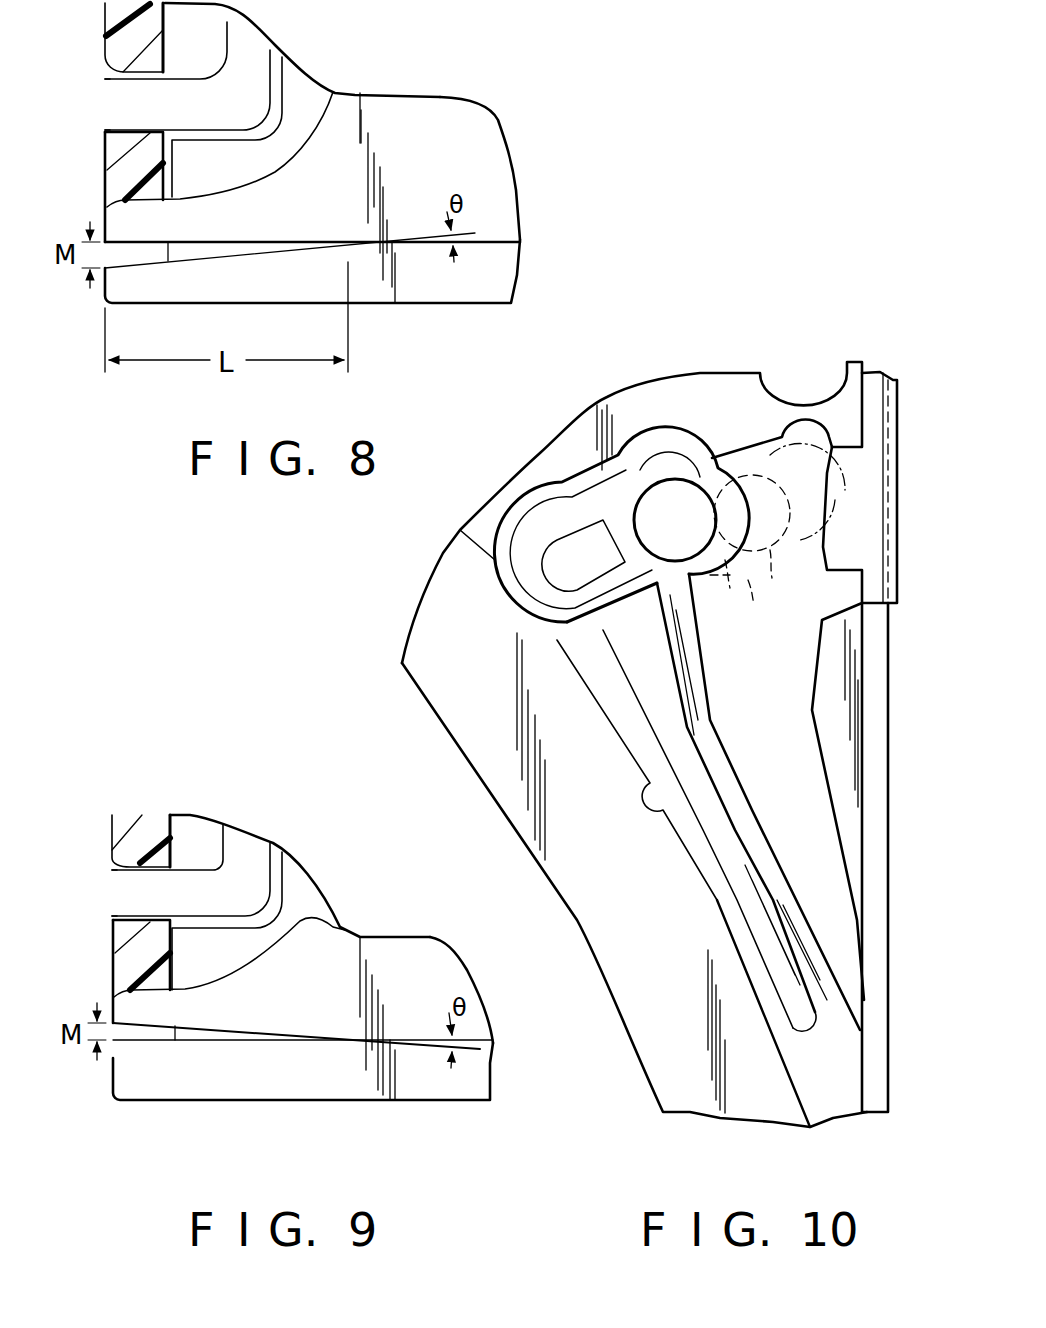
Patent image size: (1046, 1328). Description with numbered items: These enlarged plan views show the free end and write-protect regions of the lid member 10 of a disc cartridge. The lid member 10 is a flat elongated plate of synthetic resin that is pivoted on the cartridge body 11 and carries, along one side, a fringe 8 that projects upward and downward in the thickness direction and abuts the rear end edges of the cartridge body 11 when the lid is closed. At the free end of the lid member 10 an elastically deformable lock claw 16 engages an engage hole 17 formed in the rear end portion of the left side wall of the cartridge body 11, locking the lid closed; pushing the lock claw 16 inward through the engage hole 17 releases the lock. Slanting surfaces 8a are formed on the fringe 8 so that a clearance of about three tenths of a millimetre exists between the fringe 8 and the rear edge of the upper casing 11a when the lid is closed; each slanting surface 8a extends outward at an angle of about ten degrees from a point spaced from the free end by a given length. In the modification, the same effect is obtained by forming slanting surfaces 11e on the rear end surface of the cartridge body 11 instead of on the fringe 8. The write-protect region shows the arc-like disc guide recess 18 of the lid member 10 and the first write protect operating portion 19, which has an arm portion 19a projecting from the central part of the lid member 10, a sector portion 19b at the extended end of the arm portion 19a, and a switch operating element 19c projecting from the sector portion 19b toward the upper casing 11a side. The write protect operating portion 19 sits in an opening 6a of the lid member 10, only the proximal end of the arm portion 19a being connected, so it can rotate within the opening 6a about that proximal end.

In FIG. 8, the fringe 8 is at (435, 300).
In FIG. 9, the fringe 8 is at (355, 1100).
In FIG. 8, the slanting surfaces 8a is at (235, 243).
In FIG. 8, the lid member 10 is at (308, 90).
In FIG. 10, the lid member 10 is at (890, 703).
In FIG. 8, the cartridge body 11 is at (436, 88).
In FIG. 9, the cartridge body 11 is at (271, 916).
In FIG. 8, the upper casing 11a is at (500, 167).
In FIG. 9, the upper casing 11a is at (441, 958).
In FIG. 9, the slanting surfaces 11e is at (215, 1030).
In FIG. 8, the lock claw 16 is at (113, 113).
In FIG. 9, the lock claw 16 is at (127, 902).
In FIG. 8, the engage hole 17 is at (130, 72).
In FIG. 9, the engage hole 17 is at (147, 862).
In FIG. 10, the disc guide recess 18 is at (455, 718).
In FIG. 10, the first write protect operating portion 19 is at (664, 700).
In FIG. 10, the arm portion 19a is at (733, 786).
In FIG. 10, the sector portion 19b is at (552, 525).
In FIG. 10, the switch operating element 19c is at (686, 498).
In FIG. 10, the opening 6a is at (830, 820).